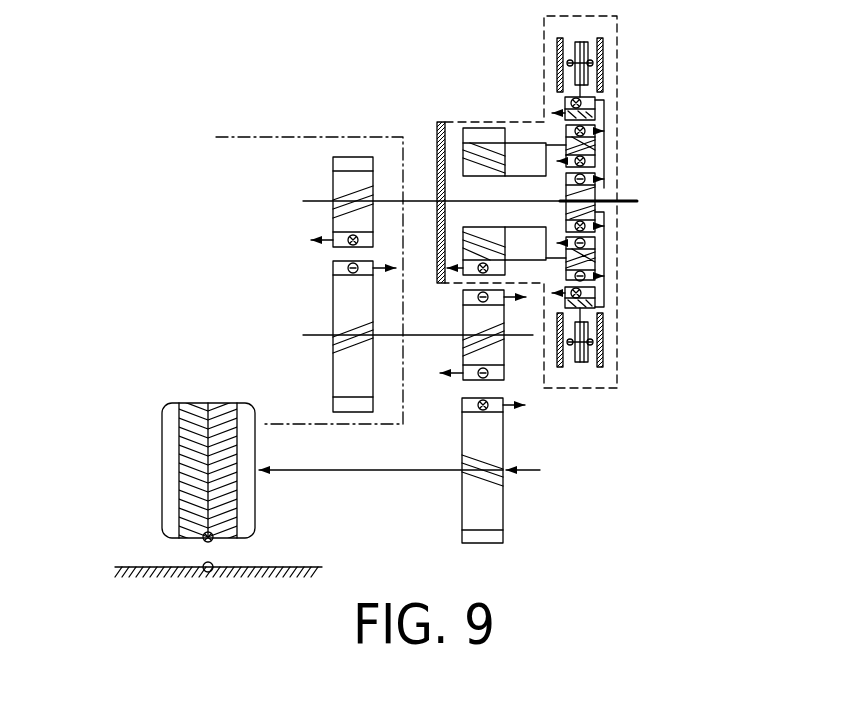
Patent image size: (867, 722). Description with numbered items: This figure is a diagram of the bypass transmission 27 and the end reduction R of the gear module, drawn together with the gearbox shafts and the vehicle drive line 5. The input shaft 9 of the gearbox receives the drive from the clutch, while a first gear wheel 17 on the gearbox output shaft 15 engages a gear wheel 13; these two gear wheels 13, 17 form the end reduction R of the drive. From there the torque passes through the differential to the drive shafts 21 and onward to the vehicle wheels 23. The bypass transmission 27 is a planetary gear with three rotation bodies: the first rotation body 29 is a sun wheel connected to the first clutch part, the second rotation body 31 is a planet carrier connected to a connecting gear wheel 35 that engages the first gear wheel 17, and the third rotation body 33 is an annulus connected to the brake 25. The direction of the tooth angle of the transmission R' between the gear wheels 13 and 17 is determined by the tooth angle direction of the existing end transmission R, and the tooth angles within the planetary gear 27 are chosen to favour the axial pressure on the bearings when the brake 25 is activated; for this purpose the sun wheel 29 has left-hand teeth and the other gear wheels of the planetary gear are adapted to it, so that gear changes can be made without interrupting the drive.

The transmission unit 5 is at (270, 137).
The input shaft 9 is at (421, 201).
The gear wheel 13 is at (478, 503).
The gearbox output shaft 15 is at (417, 335).
The first gear wheel 17 is at (480, 353).
The drive shafts 21 is at (365, 472).
The vehicle wheels 23 is at (165, 443).
The brake 25 is at (608, 47).
The bypass transmission 27 is at (612, 293).
The first rotation body 29 is at (604, 191).
The second rotation body 31 is at (604, 145).
The third rotation body 33 is at (600, 102).
The connecting gear wheel 35 is at (483, 153).
The end reduction R is at (549, 461).
The transmission R' is at (550, 366).